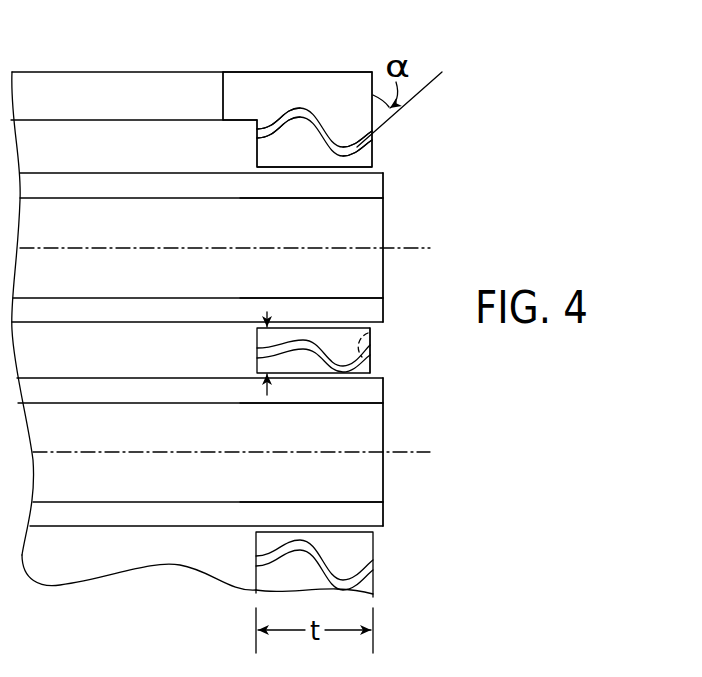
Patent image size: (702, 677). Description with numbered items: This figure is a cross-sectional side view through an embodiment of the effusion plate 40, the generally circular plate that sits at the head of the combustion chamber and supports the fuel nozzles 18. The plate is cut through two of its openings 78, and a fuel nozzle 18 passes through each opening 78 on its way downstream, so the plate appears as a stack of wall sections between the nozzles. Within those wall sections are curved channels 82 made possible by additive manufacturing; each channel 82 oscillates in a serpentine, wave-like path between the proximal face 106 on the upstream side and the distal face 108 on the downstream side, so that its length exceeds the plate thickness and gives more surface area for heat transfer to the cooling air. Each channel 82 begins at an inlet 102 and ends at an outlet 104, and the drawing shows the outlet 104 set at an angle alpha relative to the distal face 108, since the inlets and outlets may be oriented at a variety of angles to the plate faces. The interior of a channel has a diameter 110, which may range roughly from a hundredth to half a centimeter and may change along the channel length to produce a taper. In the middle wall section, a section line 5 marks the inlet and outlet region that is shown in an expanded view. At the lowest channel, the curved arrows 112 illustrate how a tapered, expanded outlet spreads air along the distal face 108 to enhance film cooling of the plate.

The fuel nozzle 18 is at (213, 236).
The effusion plate 40 is at (345, 68).
The curved channel 82 is at (291, 109).
The inlet 102 is at (257, 127).
The proximal face 106 is at (257, 137).
The outlet 104 is at (372, 137).
The distal face 108 is at (373, 155).
The opening 78 is at (428, 232).
The diameter 110 is at (256, 360).
The section line 5- 5 is at (373, 367).
The curved arrows 112 is at (376, 565).